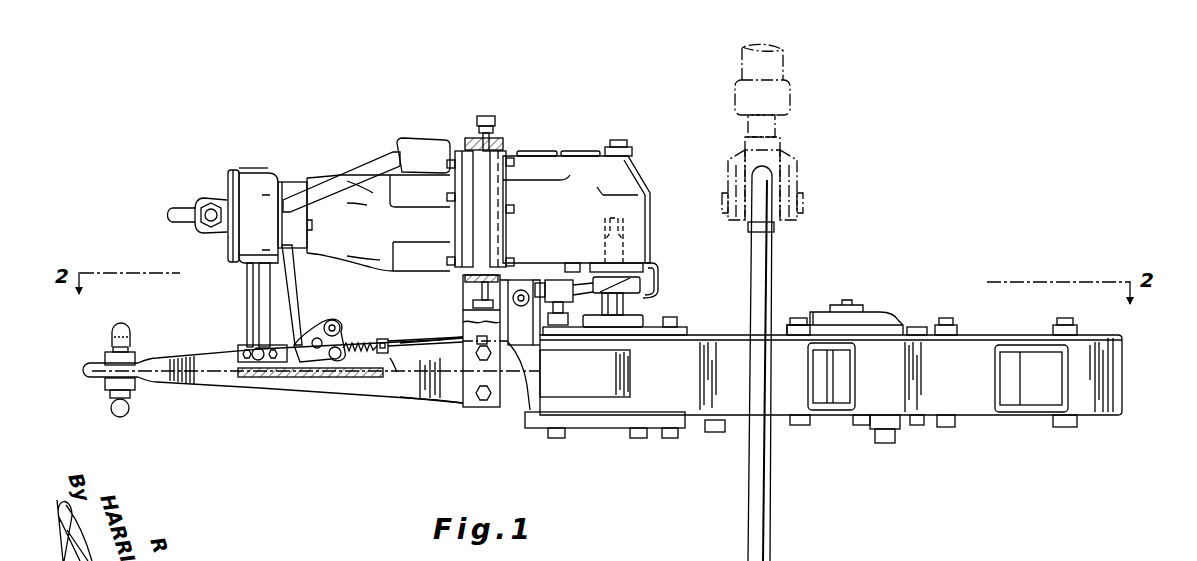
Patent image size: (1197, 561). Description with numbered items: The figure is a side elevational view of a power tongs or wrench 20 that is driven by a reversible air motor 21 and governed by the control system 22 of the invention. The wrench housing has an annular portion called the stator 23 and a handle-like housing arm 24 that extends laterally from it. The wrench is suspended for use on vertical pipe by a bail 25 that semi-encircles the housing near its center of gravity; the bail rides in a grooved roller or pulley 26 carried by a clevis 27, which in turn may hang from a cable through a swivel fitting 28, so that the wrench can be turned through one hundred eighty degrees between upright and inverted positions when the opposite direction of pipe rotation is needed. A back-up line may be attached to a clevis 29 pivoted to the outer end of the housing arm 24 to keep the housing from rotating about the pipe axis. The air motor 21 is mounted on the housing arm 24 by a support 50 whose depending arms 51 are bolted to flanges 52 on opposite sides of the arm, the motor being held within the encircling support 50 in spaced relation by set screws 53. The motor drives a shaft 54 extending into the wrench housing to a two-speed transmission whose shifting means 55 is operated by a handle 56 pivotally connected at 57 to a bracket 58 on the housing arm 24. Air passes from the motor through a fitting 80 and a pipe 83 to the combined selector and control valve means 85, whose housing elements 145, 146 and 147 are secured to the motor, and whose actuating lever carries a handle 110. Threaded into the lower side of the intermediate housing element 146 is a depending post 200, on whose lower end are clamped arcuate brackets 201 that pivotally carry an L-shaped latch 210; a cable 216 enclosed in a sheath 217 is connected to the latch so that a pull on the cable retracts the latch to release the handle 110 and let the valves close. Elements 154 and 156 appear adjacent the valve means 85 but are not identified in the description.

The power tongs or wrench 20 is at (897, 303).
The air motor 21 is at (553, 150).
The control system 22 is at (236, 270).
The annular stator 23 is at (1122, 385).
The housing arm 24 is at (190, 385).
The bail 25 is at (771, 269).
The grooved roller or pulley 26 is at (775, 232).
The clevis 27 is at (790, 162).
The swivel fitting 28 is at (790, 97).
The clevis 29 is at (121, 413).
The support 50 is at (500, 151).
The depending arms 51 is at (463, 295).
The flanges 52 is at (450, 394).
The set screws 53 is at (482, 118).
The shaft 54 is at (628, 305).
The shifting means 55 is at (659, 262).
The handle 56 is at (588, 280).
The pivotal connection 57 is at (524, 290).
The bracket 58 is at (533, 343).
The fitting 80 is at (420, 143).
The pipe 83 is at (370, 150).
The combined selector and control valve means 85 is at (250, 168).
The handle 110 is at (293, 296).
The housing element 145 is at (231, 172).
The housing element 146 is at (276, 180).
The housing element 147 is at (300, 182).
The output shaft 154 is at (166, 213).
The shaft coupling 156 is at (204, 198).
The depending post 200 is at (271, 277).
The arcuate brackets 201 is at (255, 364).
The L-shaped latch 210 is at (316, 352).
The cable or wire 216 is at (355, 355).
The sheath 217 is at (397, 355).